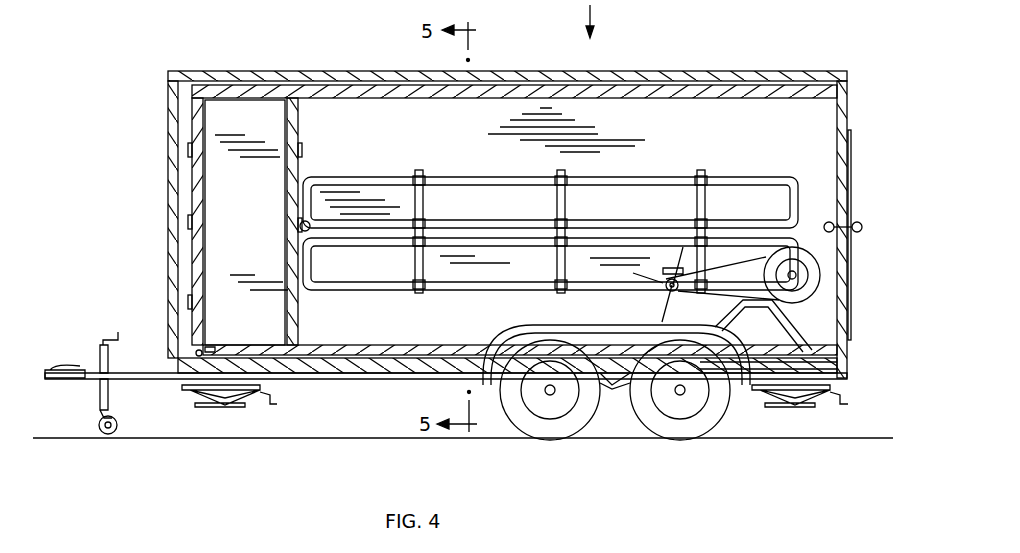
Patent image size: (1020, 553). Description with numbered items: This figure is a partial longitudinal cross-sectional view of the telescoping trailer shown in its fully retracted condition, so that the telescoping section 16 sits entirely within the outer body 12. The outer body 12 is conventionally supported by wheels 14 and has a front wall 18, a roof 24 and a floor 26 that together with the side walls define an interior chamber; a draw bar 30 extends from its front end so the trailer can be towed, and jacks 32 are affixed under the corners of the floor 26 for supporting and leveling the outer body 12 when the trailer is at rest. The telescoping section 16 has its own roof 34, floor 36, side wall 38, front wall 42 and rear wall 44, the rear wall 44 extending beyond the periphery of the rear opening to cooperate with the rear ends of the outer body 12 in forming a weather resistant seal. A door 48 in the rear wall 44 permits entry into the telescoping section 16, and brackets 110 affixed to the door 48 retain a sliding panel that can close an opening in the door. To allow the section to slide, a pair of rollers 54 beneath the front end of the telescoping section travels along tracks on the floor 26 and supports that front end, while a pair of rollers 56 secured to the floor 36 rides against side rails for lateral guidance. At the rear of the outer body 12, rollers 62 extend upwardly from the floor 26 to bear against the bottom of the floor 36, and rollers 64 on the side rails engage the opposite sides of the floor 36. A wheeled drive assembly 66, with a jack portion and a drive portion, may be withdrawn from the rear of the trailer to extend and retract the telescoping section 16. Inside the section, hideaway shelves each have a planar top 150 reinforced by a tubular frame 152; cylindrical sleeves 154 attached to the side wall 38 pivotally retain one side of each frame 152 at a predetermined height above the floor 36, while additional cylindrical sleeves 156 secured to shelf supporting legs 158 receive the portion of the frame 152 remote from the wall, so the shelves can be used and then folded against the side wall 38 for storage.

The outer body 12 is at (223, 66).
The wheels 14 is at (553, 434).
The telescoping section 16 is at (261, 82).
The front wall 18 is at (169, 128).
The roof 24 is at (299, 72).
The floor 26 is at (358, 374).
The draw bar 30 is at (68, 366).
The jacks 32 is at (236, 399).
The roof 34 is at (378, 86).
The floor 36 is at (520, 333).
The side wall 38 is at (535, 163).
The front wall 42 is at (206, 113).
The rear wall 44 is at (848, 84).
The door 48 is at (848, 112).
The rollers 54 is at (202, 350).
The rollers 56 is at (212, 350).
The rollers 62 is at (838, 379).
The rollers 64 is at (832, 346).
The wheeled drive assembly 66 is at (810, 310).
The brackets 110 is at (849, 183).
The planar top 150 is at (380, 268).
The tubular frame 152 is at (608, 177).
The cylindrical sleeves 154 is at (556, 225).
The cylindrical sleeves 156 is at (420, 178).
The shelf supporting legs 158 is at (708, 190).